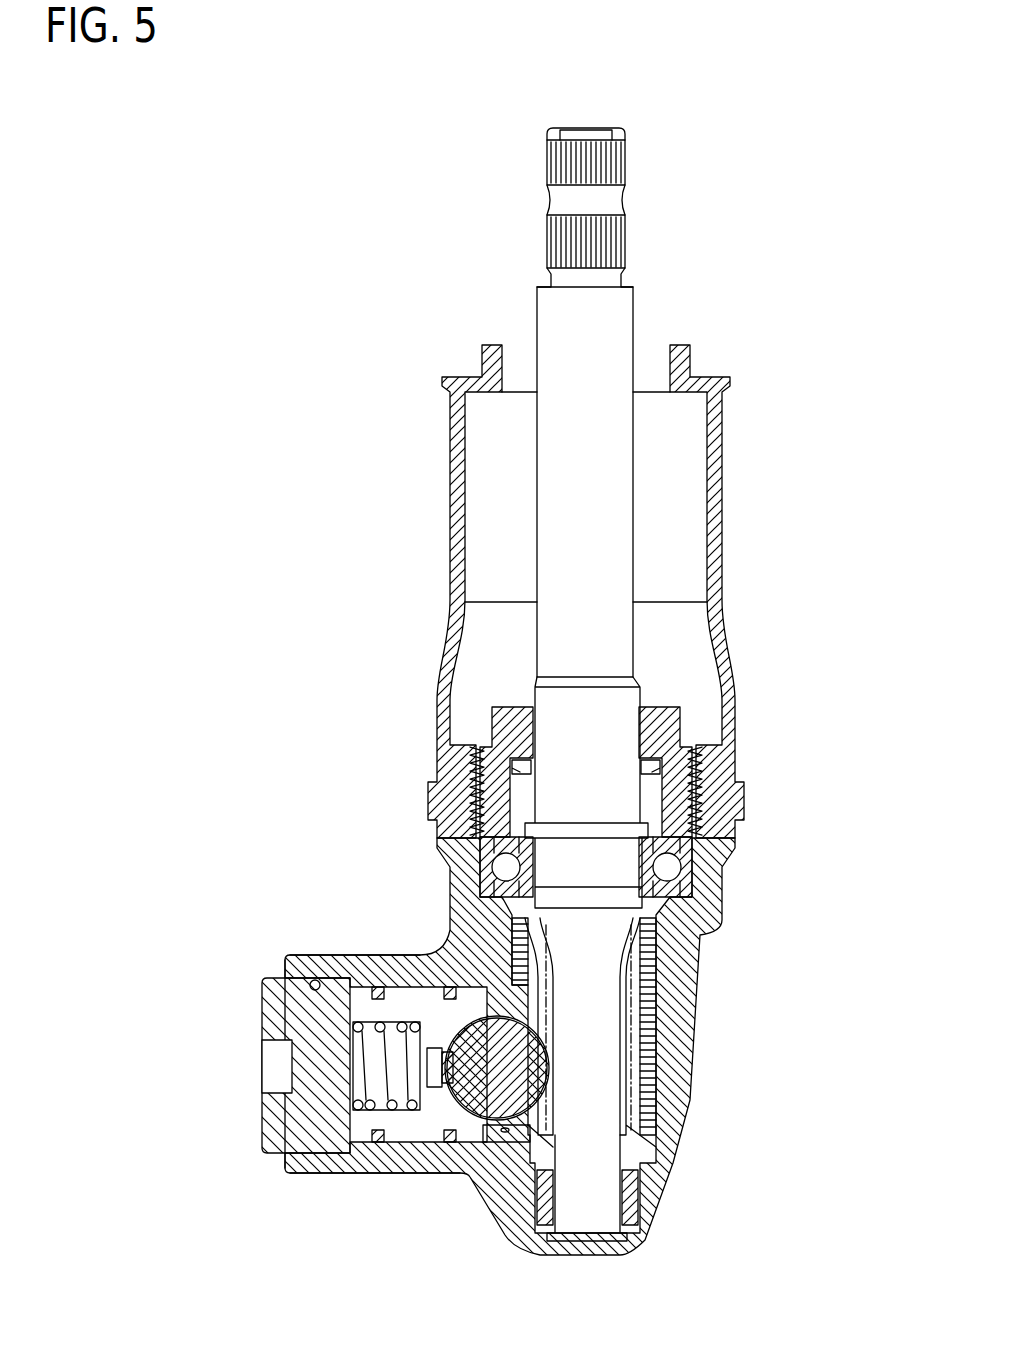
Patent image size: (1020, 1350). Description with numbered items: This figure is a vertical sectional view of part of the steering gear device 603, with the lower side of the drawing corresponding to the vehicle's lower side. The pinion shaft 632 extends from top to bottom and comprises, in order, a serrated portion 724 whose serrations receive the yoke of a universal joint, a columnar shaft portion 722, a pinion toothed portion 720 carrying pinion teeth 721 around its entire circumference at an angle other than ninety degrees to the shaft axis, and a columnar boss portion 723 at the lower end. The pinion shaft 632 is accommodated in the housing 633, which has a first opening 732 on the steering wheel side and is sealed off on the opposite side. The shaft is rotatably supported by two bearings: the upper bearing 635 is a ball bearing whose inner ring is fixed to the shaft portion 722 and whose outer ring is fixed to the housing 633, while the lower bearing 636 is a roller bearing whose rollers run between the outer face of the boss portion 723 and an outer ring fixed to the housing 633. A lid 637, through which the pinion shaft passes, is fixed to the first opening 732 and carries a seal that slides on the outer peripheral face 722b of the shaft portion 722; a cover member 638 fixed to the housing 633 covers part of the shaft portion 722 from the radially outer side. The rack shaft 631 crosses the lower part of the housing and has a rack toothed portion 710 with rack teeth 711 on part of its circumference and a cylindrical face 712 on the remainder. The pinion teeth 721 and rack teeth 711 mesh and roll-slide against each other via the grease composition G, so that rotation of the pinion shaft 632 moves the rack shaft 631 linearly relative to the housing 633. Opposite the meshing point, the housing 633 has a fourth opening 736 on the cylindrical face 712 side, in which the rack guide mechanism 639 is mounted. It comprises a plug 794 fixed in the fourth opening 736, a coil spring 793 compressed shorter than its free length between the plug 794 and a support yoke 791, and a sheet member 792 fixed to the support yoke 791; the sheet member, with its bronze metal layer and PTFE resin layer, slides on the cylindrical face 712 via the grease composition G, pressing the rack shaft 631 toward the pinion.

The steering gear device 603 is at (742, 200).
The serrated portion 724 is at (622, 255).
The pinion shaft 632 is at (537, 312).
The shaft portion 722 is at (617, 455).
The outer peripheral face 722b is at (642, 700).
The cover member 638 is at (452, 650).
The lid 637 is at (663, 732).
The first opening 732 is at (697, 772).
The bearing 635 is at (687, 877).
The housing 633 is at (727, 905).
The rack guide mechanism 639 is at (275, 1160).
The plug 794 is at (277, 1010).
The fourth opening 736 is at (313, 984).
The coil spring 793 is at (355, 1090).
The sheet member 792 is at (440, 1090).
The support yoke 791 is at (380, 1140).
The rack shaft 631 is at (487, 1035).
The cylindrical face 712 is at (483, 1132).
The rack teeth 711 is at (545, 1080).
The pinion teeth 721 is at (637, 1048).
The pinion toothed portion 720 is at (648, 1003).
The rack toothed portion 710 is at (558, 1102).
The grease composition G is at (523, 968).
The bearing 636 is at (632, 1193).
The boss portion 723 is at (600, 1198).